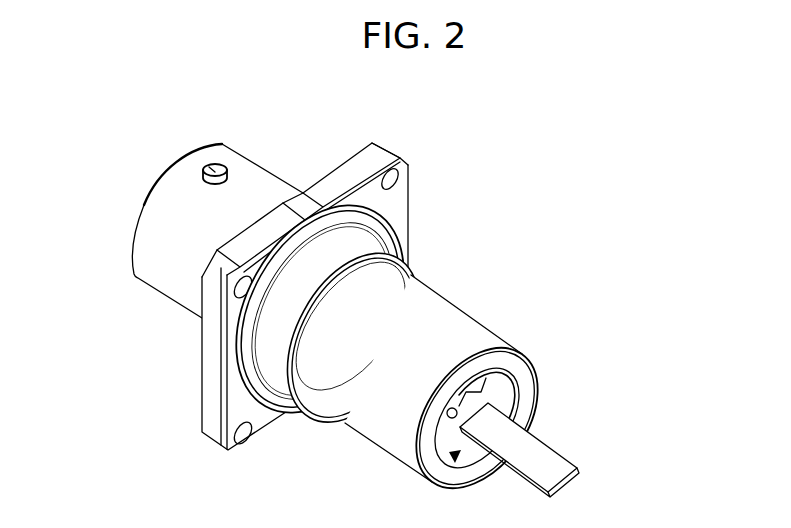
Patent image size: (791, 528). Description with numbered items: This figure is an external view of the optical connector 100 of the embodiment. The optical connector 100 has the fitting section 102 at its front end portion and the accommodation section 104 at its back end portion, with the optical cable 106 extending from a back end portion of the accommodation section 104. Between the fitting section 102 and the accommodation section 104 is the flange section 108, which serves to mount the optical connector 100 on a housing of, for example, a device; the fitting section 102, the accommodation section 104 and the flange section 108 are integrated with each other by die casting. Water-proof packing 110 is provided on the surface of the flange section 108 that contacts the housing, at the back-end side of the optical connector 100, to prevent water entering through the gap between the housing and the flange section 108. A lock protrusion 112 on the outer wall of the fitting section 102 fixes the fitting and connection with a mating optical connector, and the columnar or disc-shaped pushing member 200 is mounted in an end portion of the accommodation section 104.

The optical connector 100 is at (358, 302).
The fitting section 102 is at (272, 190).
The accommodation section 104 is at (546, 357).
The optical cable 106 is at (548, 457).
The flange section 108 is at (370, 158).
The water-proof packing 110 is at (262, 400).
The lock protrusion 112 is at (207, 166).
The pushing member 200 is at (510, 398).